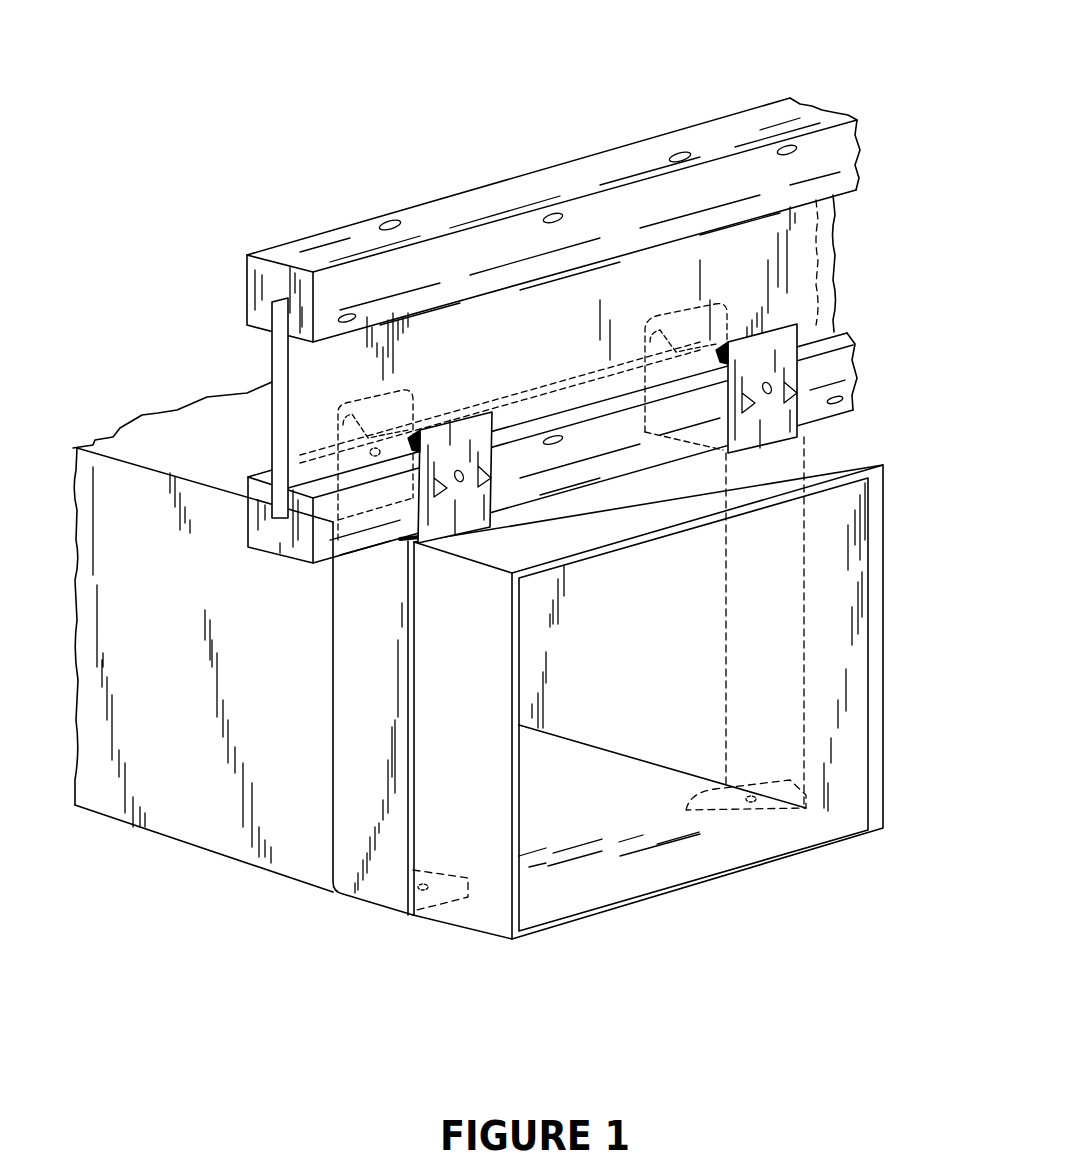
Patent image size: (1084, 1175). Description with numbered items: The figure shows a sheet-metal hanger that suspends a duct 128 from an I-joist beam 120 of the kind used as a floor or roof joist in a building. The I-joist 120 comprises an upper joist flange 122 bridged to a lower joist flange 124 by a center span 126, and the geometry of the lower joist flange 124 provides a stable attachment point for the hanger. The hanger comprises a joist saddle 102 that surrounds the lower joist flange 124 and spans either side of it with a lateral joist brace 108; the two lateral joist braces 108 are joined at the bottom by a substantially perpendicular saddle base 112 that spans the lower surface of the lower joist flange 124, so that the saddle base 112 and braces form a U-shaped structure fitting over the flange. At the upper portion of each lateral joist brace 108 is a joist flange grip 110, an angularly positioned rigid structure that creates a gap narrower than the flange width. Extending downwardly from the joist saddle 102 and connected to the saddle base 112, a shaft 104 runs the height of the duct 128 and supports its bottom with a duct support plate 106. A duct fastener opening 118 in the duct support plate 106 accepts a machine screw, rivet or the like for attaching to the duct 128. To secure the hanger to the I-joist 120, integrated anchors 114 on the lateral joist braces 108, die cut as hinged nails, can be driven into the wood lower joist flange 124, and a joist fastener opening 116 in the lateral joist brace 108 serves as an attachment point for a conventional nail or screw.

The joist saddle 102 is at (320, 468).
The shaft 104 is at (338, 847).
The duct support plate 106 is at (472, 887).
The lateral joist brace 108 is at (527, 400).
The joist flange grip 110 is at (400, 404).
The saddle base 112 is at (400, 520).
The integrated anchor 114 is at (553, 458).
The joist fastener opening 116 is at (460, 482).
The duct fastener opening 118 is at (427, 890).
The I-joist beam 120 is at (862, 92).
The upper joist flange 122 is at (580, 180).
The lower joist flange 124 is at (260, 533).
The center span 126 is at (278, 343).
The duct 128 is at (180, 825).